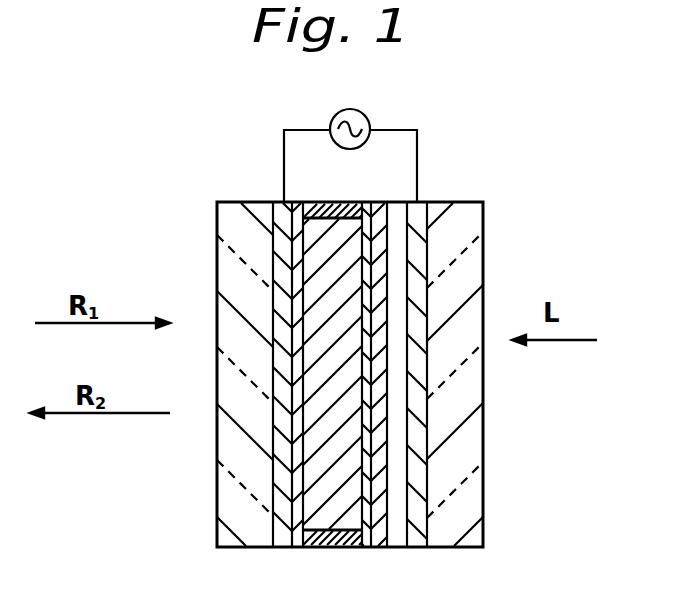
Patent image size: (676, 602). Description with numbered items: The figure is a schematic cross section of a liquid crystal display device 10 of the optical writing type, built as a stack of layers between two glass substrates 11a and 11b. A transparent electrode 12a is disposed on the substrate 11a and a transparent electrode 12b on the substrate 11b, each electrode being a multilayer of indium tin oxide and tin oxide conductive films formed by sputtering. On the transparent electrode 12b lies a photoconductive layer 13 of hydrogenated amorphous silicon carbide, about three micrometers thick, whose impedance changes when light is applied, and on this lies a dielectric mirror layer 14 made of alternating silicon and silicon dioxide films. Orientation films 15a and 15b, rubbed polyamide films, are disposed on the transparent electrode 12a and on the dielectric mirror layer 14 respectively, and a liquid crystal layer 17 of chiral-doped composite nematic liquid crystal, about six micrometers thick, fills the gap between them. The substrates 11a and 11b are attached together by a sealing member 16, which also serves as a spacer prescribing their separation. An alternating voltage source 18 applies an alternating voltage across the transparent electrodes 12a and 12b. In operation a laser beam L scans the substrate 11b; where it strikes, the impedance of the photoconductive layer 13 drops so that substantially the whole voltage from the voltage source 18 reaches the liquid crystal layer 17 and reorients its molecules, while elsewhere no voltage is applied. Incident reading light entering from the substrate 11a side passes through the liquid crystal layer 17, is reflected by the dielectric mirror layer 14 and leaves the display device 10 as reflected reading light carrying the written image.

The liquid crystal display device 10 is at (152, 264).
The glass substrate 11a is at (233, 221).
The glass substrate 11b is at (470, 220).
The transparent electrode 12a is at (283, 202).
The transparent electrode 12b is at (427, 203).
The photoconductive layer 13 is at (396, 540).
The dielectric mirror layer 14 is at (377, 541).
The orientation film 15a is at (300, 202).
The orientation film 15b is at (367, 202).
The sealing member 16 is at (328, 203).
The liquid crystal layer 17 is at (326, 512).
The alternating voltage source 18 is at (365, 119).